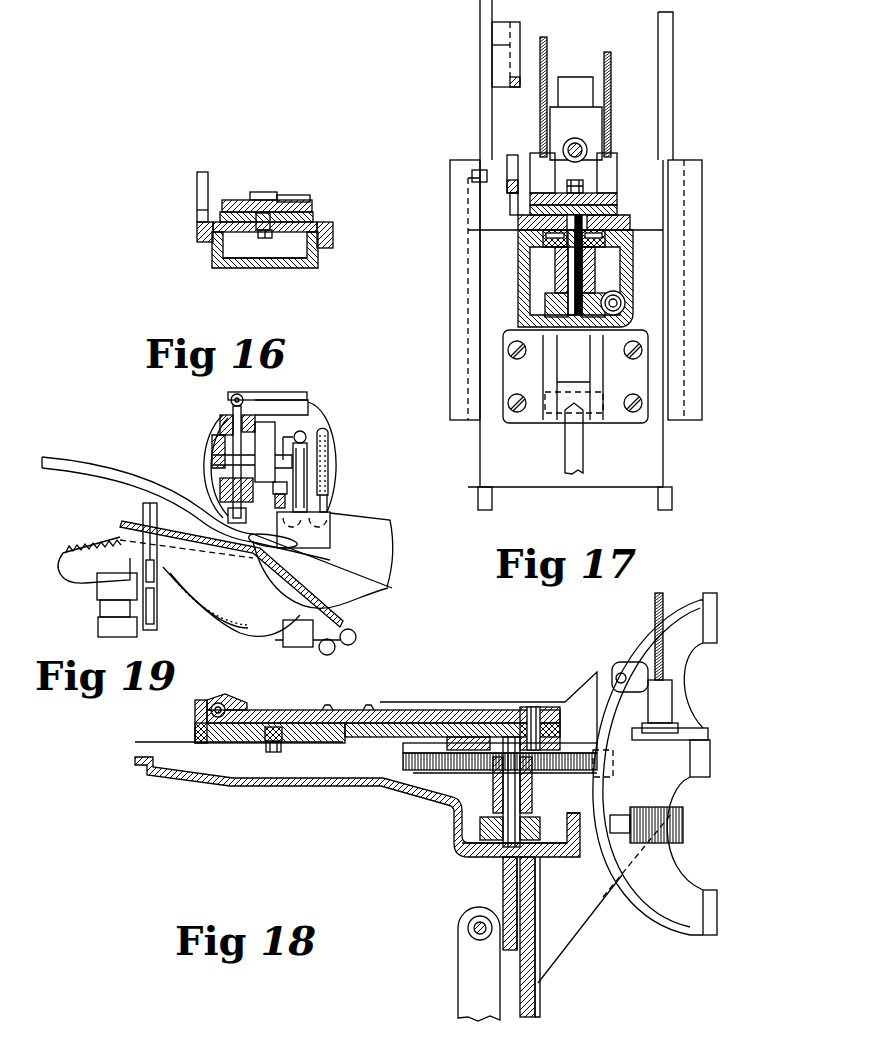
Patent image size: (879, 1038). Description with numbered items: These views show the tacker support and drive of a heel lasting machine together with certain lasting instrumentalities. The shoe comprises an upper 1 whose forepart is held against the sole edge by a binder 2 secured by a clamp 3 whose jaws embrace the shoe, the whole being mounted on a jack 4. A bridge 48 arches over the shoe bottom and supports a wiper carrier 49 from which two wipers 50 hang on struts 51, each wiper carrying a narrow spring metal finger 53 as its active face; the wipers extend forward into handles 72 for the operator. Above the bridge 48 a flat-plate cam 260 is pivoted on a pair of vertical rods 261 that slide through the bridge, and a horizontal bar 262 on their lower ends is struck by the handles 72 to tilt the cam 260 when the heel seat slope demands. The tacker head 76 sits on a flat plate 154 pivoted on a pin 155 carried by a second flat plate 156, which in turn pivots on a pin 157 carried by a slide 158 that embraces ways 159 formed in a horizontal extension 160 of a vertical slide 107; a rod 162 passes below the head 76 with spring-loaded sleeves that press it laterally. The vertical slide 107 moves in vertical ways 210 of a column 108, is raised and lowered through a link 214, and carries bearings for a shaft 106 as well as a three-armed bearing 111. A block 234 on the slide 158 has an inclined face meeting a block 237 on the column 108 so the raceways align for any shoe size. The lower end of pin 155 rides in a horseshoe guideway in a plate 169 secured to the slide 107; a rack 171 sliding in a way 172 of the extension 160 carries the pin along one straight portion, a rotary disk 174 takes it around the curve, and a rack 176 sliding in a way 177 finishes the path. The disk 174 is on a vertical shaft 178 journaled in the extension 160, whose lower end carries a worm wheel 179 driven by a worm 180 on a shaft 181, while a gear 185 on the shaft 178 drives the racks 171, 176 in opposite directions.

In FIG. 19, the upper 1 is at (75, 572).
In FIG. 19, the binder 2 is at (65, 553).
In FIG. 19, the clamp 3 is at (157, 605).
In FIG. 19, the jack 4 is at (283, 640).
In FIG. 19, the bridge 48 is at (208, 478).
In FIG. 19, the wiper carrier 49 is at (333, 448).
In FIG. 19, the wipers 50 is at (330, 525).
In FIG. 19, the struts 51 is at (307, 478).
In FIG. 19, the spring metal finger 53 is at (255, 538).
In FIG. 19, the handles 72 is at (80, 465).
In FIG. 18, the head 76 is at (230, 703).
In FIG. 17, the shaft 106 is at (588, 150).
In FIG. 17, the vertical slide 107 is at (657, 247).
In FIG. 18, the vertical slide 107 is at (535, 965).
In FIG. 17, the column 108 is at (490, 27).
In FIG. 18, the three-armed bearing 111 is at (700, 620).
In FIG. 16, the flat plate 154 is at (312, 203).
In FIG. 17, the flat plate 154 is at (605, 200).
In FIG. 18, the flat plate 154 is at (292, 702).
In FIG. 16, the pin 155 is at (262, 200).
In FIG. 17, the pin 155 is at (585, 182).
In FIG. 18, the pin 155 is at (534, 706).
In FIG. 16, the second flat plate 156 is at (315, 217).
In FIG. 17, the second flat plate 156 is at (620, 208).
In FIG. 18, the second flat plate 156 is at (395, 722).
In FIG. 16, the pin 157 is at (262, 232).
In FIG. 18, the pin 157 is at (263, 745).
In FIG. 16, the slide 158 is at (330, 236).
In FIG. 18, the slide 158 is at (200, 737).
In FIG. 16, the ways 159 is at (310, 242).
In FIG. 16, the horizontal extension 160 is at (217, 262).
In FIG. 18, the horizontal extension 160 is at (172, 773).
In FIG. 18, the rod 162 is at (195, 705).
In FIG. 17, the plate 169 is at (630, 223).
In FIG. 18, the plate 169 is at (452, 745).
In FIG. 17, the rack 171 is at (520, 227).
In FIG. 18, the rack 171 is at (406, 762).
In FIG. 17, the way 172 is at (552, 246).
In FIG. 17, the rotary disk 174 is at (548, 203).
In FIG. 17, the rack 176 is at (598, 252).
In FIG. 17, the way 177 is at (633, 240).
In FIG. 17, the vertical shaft 178 is at (592, 280).
In FIG. 18, the vertical shaft 178 is at (522, 793).
In FIG. 17, the worm wheel 179 is at (557, 300).
In FIG. 18, the worm wheel 179 is at (478, 840).
In FIG. 17, the worm 180 is at (625, 312).
In FIG. 18, the shaft 181 is at (617, 815).
In FIG. 17, the gear 185 is at (562, 262).
In FIG. 18, the gear 185 is at (492, 770).
In FIG. 17, the vertical ways 210 is at (683, 358).
In FIG. 17, the link 214 is at (563, 465).
In FIG. 18, the link 214 is at (470, 993).
In FIG. 17, the block 234 is at (510, 165).
In FIG. 17, the block 237 is at (515, 62).
In FIG. 19, the cam 260 is at (231, 400).
In FIG. 19, the vertical rods 261 is at (220, 490).
In FIG. 19, the horizontal bar 262 is at (228, 515).